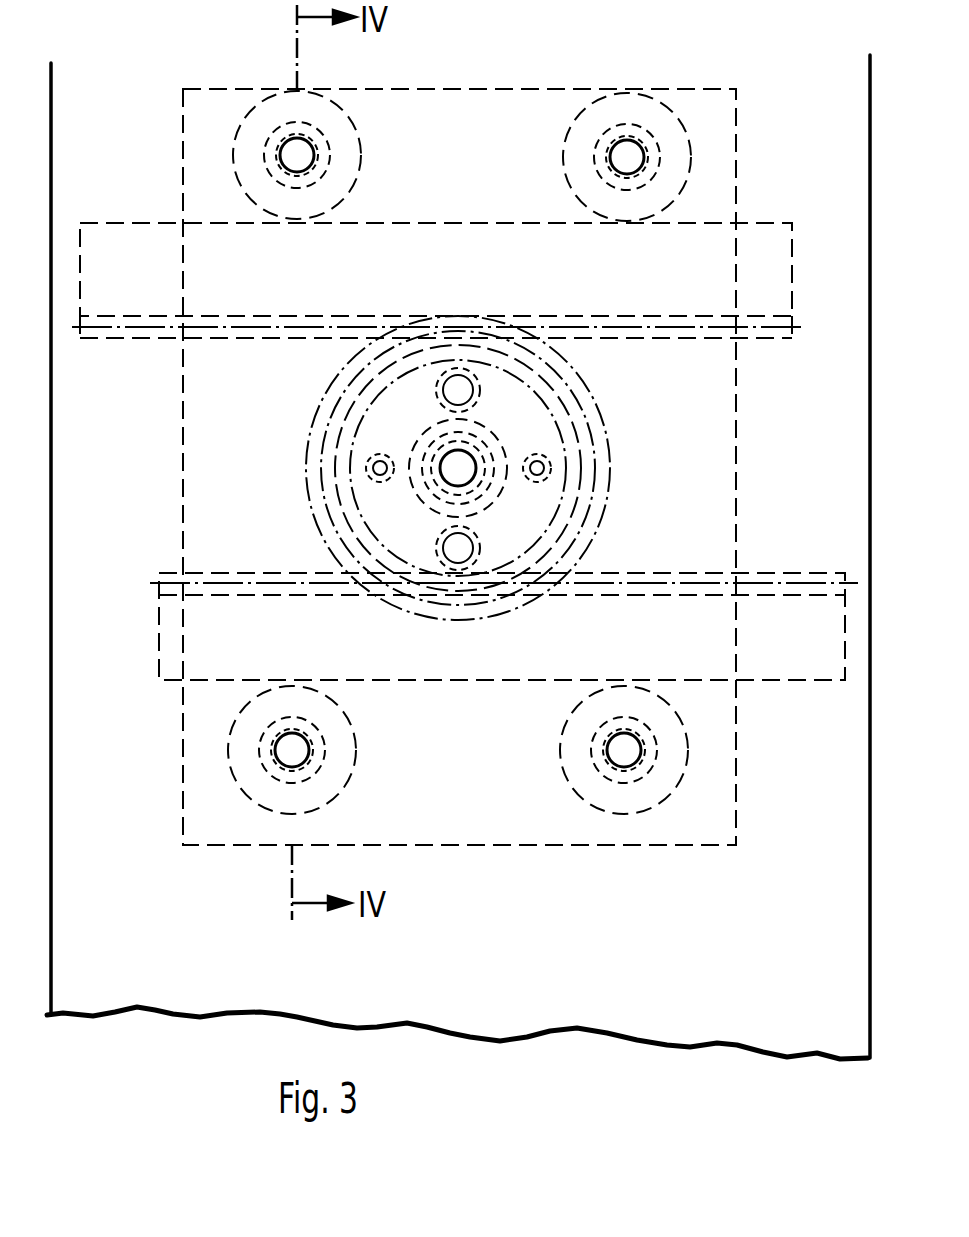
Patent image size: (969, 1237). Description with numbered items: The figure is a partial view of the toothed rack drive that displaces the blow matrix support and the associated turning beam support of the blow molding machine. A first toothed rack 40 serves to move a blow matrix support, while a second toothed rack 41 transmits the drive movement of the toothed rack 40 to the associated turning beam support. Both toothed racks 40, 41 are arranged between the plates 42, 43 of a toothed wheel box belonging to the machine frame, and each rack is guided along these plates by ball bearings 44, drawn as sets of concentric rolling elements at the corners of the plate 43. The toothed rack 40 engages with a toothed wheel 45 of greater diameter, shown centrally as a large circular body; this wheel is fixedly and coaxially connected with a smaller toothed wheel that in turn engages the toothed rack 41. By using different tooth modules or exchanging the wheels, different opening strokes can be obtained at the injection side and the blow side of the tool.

The toothed rack 40 is at (760, 232).
The toothed rack 41 is at (805, 655).
The plate 42 is at (735, 1005).
The plate 43 is at (548, 822).
The ball bearings 44 is at (565, 147).
The toothed wheel 45 is at (605, 440).